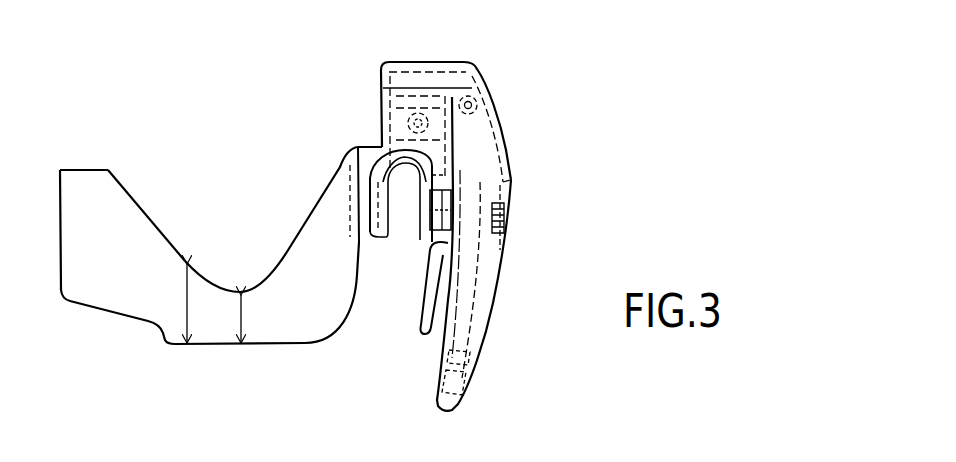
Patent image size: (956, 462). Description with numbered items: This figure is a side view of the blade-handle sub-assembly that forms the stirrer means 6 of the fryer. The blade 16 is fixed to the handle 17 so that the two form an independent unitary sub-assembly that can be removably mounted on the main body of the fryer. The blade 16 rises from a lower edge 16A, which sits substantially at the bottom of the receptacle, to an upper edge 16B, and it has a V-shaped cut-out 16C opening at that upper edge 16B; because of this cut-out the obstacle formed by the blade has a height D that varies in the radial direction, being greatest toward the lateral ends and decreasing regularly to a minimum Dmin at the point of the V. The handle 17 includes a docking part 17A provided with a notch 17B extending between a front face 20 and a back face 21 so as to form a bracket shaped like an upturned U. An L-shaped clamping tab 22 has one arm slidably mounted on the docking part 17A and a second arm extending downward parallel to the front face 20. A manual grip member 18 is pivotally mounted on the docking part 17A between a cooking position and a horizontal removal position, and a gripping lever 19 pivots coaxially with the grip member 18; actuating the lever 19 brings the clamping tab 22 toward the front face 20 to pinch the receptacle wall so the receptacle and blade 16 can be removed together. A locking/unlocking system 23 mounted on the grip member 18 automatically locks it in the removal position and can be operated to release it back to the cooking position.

The stirrer means 6 is at (86, 158).
The blade 16 is at (78, 262).
The lower edge 16A is at (226, 347).
The upper edge 16B is at (166, 240).
The V-shaped cut-out 16C is at (264, 238).
The handle 17 is at (445, 209).
The docking part 17A is at (418, 62).
The notch 17B is at (406, 207).
The manual grip member 18 is at (483, 303).
The gripping lever 19 is at (423, 333).
The front face 20 is at (383, 232).
The back face 21 is at (447, 223).
The clamping tab 22 is at (349, 143).
The locking/unlocking system 23 is at (512, 186).
The height of obstacle D is at (177, 303).
The minimum height Dmin is at (269, 319).